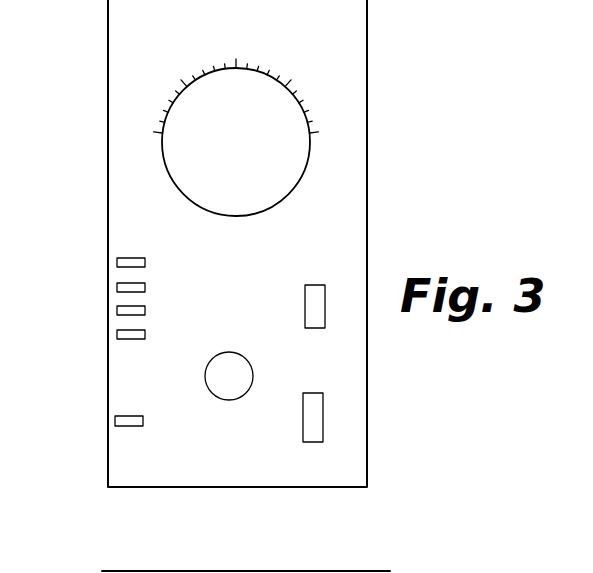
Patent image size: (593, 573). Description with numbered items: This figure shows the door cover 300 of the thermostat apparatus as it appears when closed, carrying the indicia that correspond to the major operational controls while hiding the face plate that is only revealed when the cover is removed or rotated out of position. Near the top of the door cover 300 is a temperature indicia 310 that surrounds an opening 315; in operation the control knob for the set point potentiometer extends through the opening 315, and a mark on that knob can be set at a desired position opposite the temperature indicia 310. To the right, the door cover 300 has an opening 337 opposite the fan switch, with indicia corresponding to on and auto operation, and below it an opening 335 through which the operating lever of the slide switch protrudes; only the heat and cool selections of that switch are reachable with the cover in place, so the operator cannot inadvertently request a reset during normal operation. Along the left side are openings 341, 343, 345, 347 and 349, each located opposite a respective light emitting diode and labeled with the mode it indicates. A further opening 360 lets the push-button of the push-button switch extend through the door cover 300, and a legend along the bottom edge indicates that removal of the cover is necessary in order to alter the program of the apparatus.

The door cover 300 is at (348, 52).
The temperature indicia 310 is at (198, 73).
The opening 315 is at (198, 153).
The opening 335 is at (350, 383).
The opening 337 is at (355, 255).
The opening 341 is at (118, 257).
The opening 343 is at (119, 283).
The opening 345 is at (119, 305).
The opening 347 is at (118, 327).
The opening 349 is at (120, 430).
The opening 360 is at (234, 375).